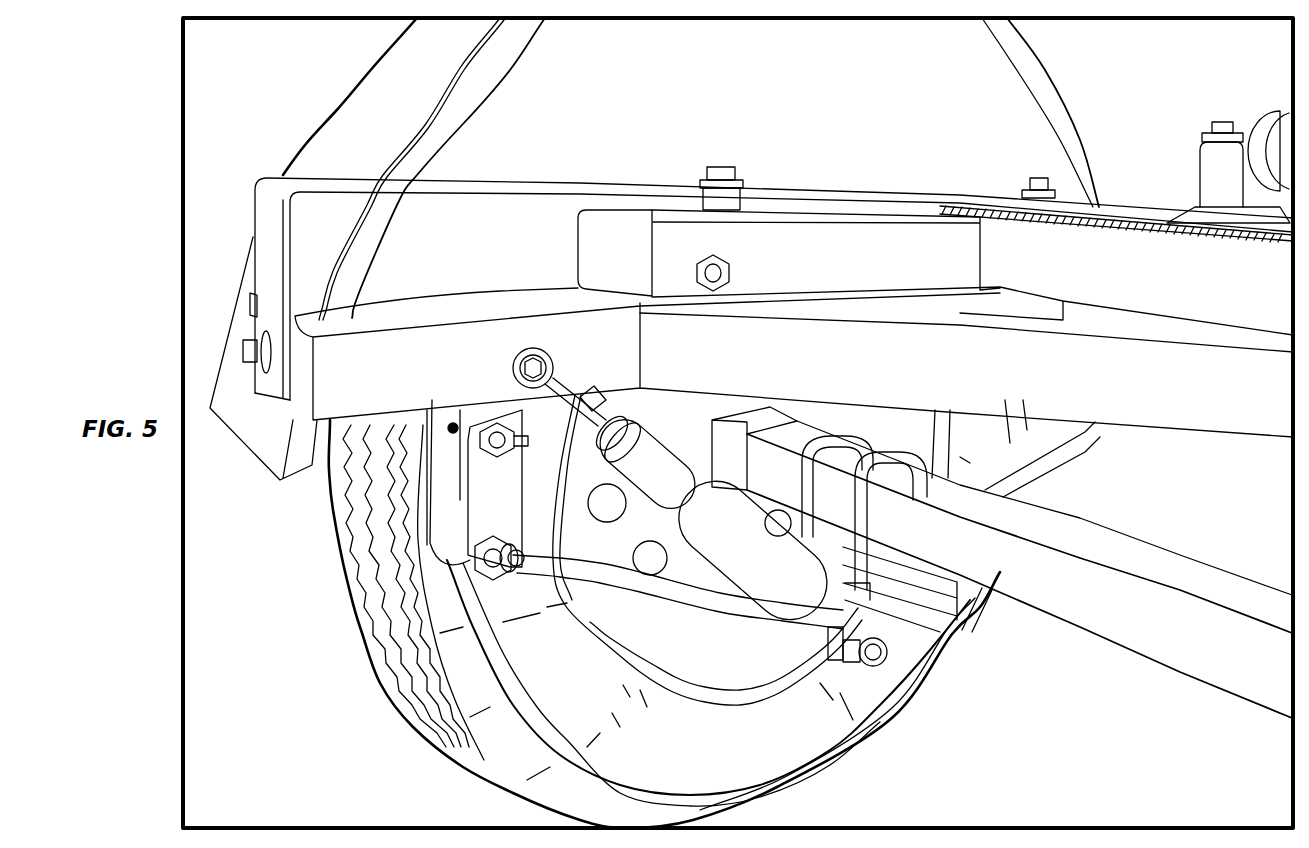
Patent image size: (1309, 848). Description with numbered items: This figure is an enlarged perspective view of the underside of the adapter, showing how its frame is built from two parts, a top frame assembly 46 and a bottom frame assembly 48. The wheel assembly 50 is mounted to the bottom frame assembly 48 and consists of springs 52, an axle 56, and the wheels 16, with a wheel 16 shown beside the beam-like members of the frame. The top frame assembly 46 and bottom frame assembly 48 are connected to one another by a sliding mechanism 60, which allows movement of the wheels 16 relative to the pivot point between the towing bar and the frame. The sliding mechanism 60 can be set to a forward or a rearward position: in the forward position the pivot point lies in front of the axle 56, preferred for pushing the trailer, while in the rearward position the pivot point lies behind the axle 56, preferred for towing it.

The wheels 16 is at (415, 703).
The top frame assembly 46 is at (1148, 255).
The bottom frame assembly 48 is at (1187, 392).
The wheel assembly 50 is at (928, 724).
The springs 52 is at (550, 587).
The axle 56 is at (1077, 603).
The sliding mechanism 60 is at (777, 150).